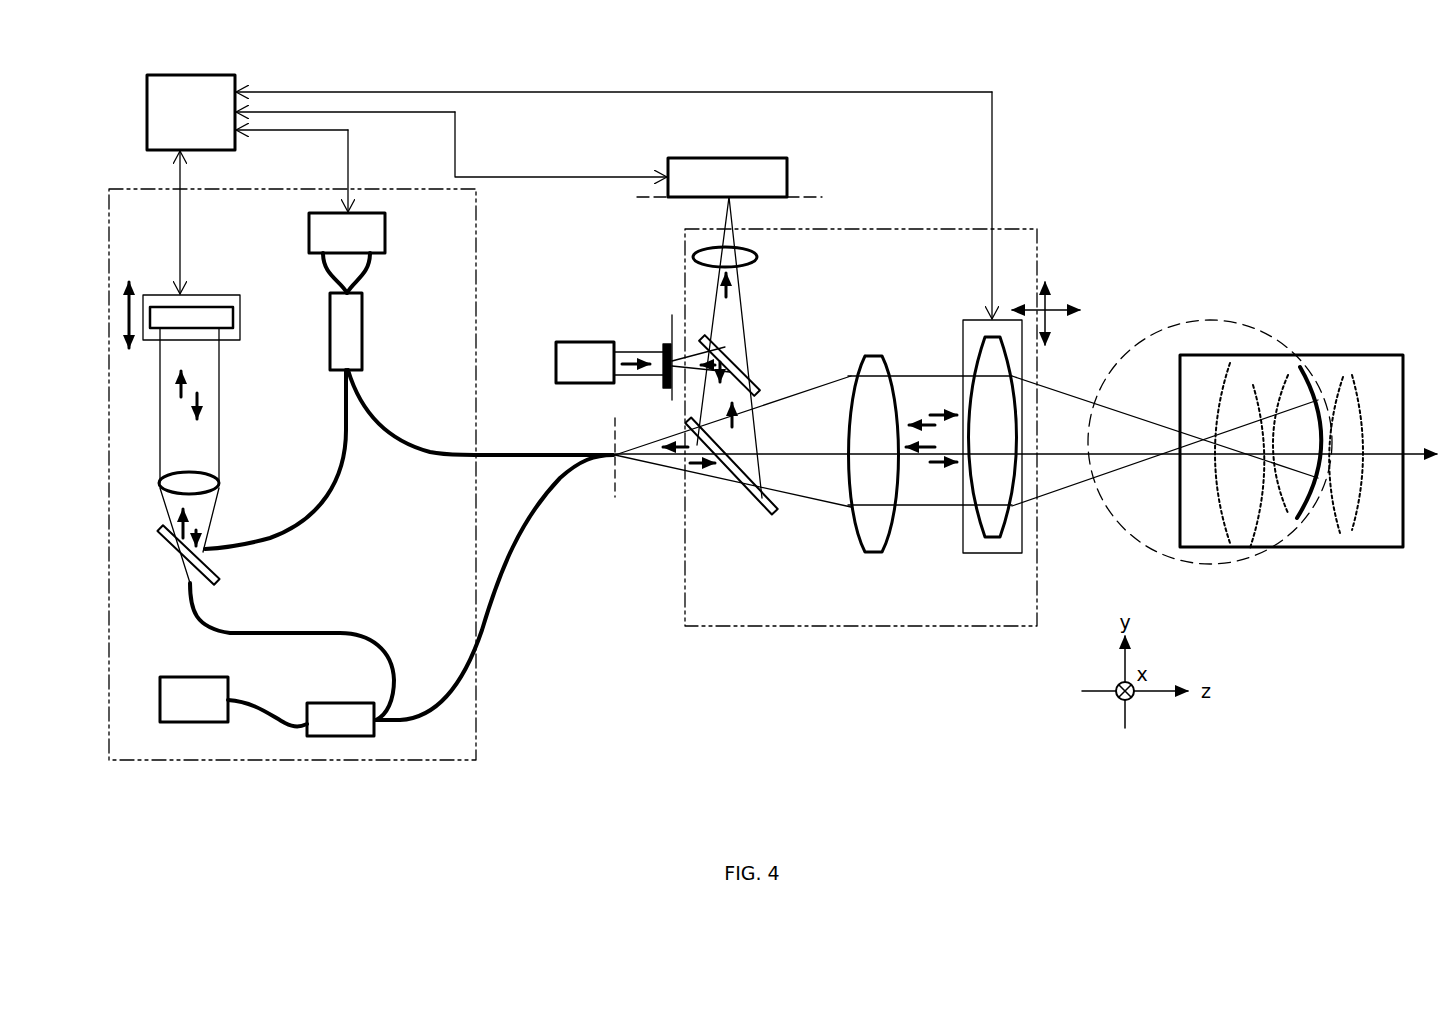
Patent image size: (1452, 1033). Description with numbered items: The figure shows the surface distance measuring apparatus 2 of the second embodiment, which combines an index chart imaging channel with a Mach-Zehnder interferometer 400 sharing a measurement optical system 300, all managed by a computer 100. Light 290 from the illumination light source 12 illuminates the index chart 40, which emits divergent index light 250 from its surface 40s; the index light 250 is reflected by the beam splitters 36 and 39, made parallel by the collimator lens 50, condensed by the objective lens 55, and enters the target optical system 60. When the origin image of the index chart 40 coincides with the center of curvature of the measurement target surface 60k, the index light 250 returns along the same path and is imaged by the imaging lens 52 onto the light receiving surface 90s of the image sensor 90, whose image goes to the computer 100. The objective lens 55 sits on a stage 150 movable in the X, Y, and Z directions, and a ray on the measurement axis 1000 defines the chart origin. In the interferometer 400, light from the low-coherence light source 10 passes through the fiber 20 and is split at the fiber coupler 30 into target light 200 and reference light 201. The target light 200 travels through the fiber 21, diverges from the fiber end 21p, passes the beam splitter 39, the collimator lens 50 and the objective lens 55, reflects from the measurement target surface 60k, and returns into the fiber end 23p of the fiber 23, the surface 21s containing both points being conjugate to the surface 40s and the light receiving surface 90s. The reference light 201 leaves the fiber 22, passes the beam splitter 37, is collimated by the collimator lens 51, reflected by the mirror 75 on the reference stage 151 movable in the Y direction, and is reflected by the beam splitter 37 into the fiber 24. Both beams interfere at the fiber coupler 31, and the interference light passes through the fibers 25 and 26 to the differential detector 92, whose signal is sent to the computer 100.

The surface distance measuring apparatus 2 is at (786, 51).
The low-coherence light source 10 is at (212, 688).
The illumination light source 12 is at (573, 370).
The fiber 20 is at (268, 712).
The fiber 21 is at (506, 585).
The surface 21s is at (612, 435).
The fiber end (exit point) 21p is at (618, 458).
The fiber 22 is at (270, 633).
The fiber 23 is at (408, 447).
The fiber end (incident point) 23p is at (615, 450).
The fiber 24 is at (318, 513).
The fiber 25 is at (367, 273).
The fiber 26 is at (324, 267).
The fiber coupler 30 is at (330, 713).
The fiber coupler 31 is at (345, 355).
The beam splitter 36 is at (750, 378).
The beam splitter 37 is at (217, 570).
The beam splitter 39 is at (775, 515).
The index chart 40 is at (667, 344).
The surface 40s is at (672, 317).
The collimator lens 50 is at (871, 552).
The collimator lens 51 is at (219, 484).
The imaging lens 52 is at (694, 260).
The objective lens 55 is at (1000, 493).
The target optical system 60 is at (1385, 547).
The measurement target surface 60k is at (1307, 376).
The mirror 75 is at (233, 315).
The image sensor 90 is at (787, 177).
The light receiving surface 90s is at (652, 198).
The differential detector 92 is at (373, 227).
The computer 100 is at (215, 139).
The stage 150 is at (963, 332).
The reference stage 151 is at (200, 295).
The target light 200 is at (694, 453).
The reference light 201 is at (187, 383).
The index light 250 is at (726, 350).
The light 290 is at (628, 354).
The measurement optical system 300 is at (915, 229).
The interferometer 400 is at (476, 720).
The measurement axis 1000 is at (1414, 449).